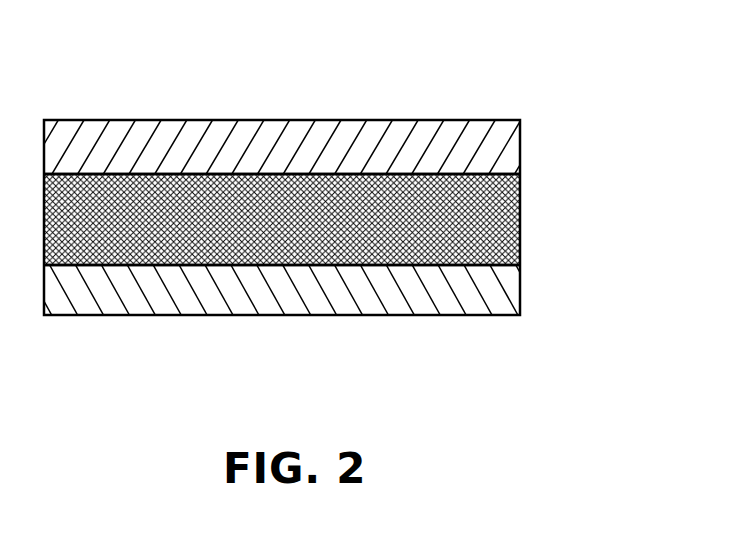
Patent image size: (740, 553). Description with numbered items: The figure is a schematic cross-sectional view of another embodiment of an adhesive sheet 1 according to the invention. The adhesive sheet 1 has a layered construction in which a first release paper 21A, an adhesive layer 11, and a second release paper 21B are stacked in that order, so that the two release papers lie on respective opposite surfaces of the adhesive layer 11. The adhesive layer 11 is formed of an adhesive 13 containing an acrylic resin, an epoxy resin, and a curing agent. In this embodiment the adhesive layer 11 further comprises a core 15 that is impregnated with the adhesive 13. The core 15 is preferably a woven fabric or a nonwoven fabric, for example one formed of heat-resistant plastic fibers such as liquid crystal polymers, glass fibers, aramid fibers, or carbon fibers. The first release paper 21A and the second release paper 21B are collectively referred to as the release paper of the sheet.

The adhesive sheet 1 is at (414, 95).
The adhesive layer 11 is at (366, 214).
The adhesive 13 is at (521, 200).
The core 15 is at (521, 247).
The first release paper 21A is at (521, 139).
The second release paper 21B is at (521, 290).